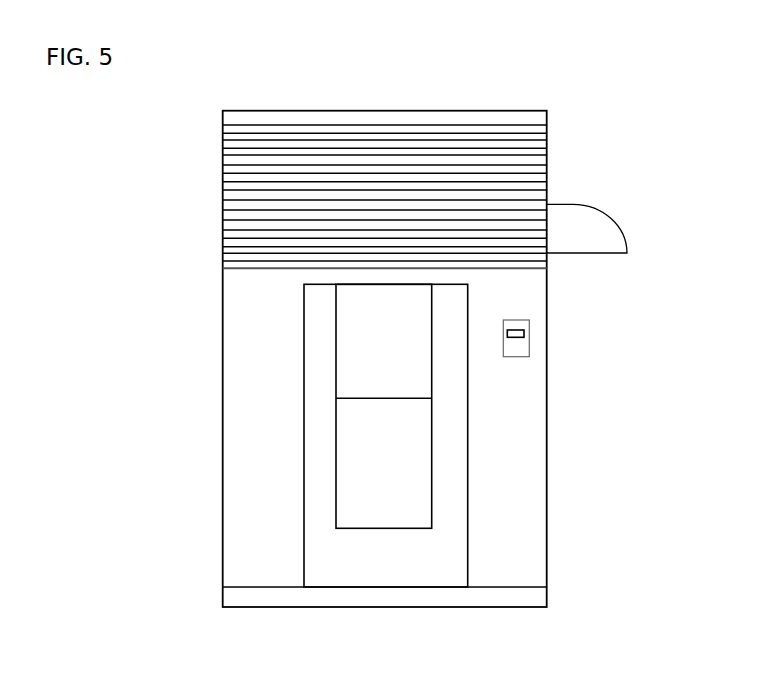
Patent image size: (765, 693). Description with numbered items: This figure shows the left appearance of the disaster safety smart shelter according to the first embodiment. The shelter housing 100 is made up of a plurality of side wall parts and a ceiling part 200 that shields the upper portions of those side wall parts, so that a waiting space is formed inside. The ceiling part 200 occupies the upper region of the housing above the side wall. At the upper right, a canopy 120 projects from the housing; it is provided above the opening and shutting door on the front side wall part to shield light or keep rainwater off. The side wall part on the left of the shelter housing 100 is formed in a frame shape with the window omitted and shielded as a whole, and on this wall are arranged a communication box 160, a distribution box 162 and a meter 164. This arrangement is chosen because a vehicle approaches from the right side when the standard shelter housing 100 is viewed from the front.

The shelter housing 100 is at (203, 457).
The ceiling part 200 is at (203, 202).
The canopy 120 is at (607, 213).
The communication box 160 is at (416, 374).
The distribution box 162 is at (416, 470).
The meter 164 is at (521, 333).